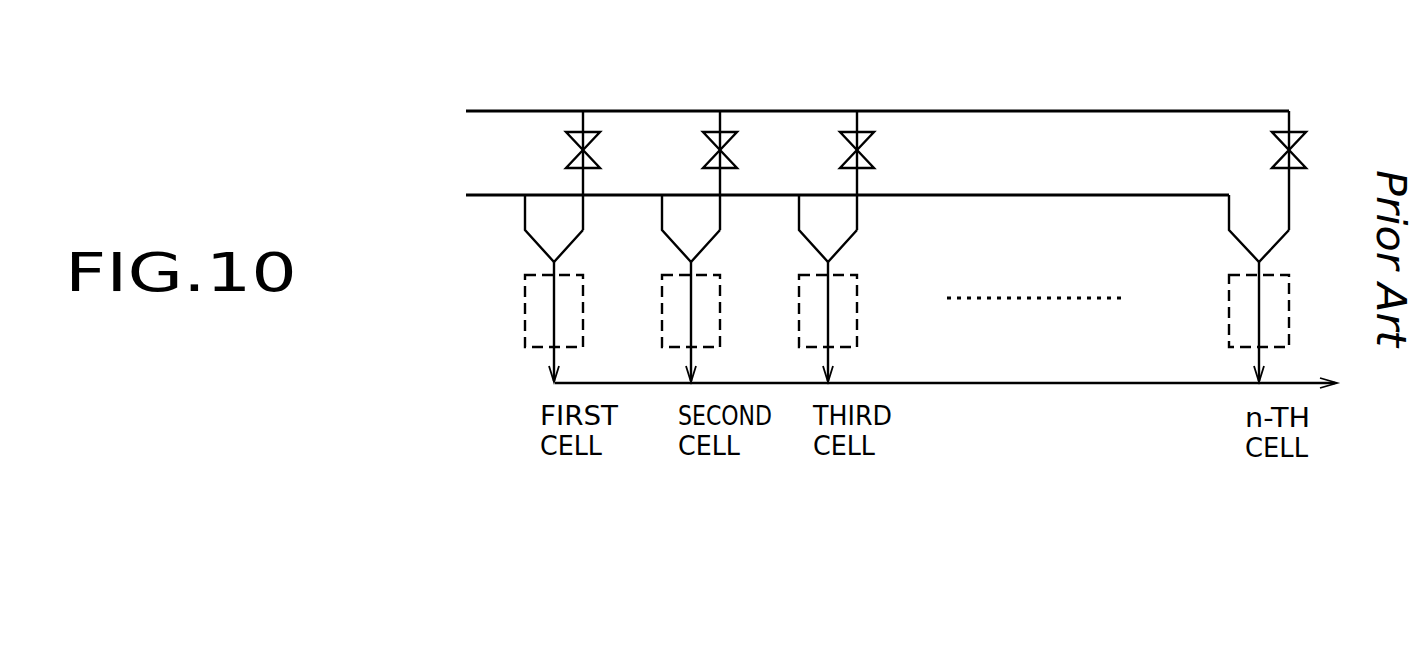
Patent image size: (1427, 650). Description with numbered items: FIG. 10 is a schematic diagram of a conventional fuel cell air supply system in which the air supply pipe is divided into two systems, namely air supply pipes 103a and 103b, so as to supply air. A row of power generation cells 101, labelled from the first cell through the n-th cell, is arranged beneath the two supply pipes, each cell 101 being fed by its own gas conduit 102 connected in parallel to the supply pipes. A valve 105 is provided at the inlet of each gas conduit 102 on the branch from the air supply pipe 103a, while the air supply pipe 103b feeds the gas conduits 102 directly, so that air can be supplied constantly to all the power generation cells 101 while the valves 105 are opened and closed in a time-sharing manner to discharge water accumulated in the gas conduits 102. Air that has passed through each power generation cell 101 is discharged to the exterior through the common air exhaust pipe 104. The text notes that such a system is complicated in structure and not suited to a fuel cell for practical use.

The power generation cell 101 is at (527, 322).
The gas conduit 102 is at (553, 286).
The air supply pipe 103a is at (485, 111).
The air supply pipe 103b is at (485, 195).
The air exhaust pipe 104 is at (567, 383).
The valve 105 is at (599, 142).